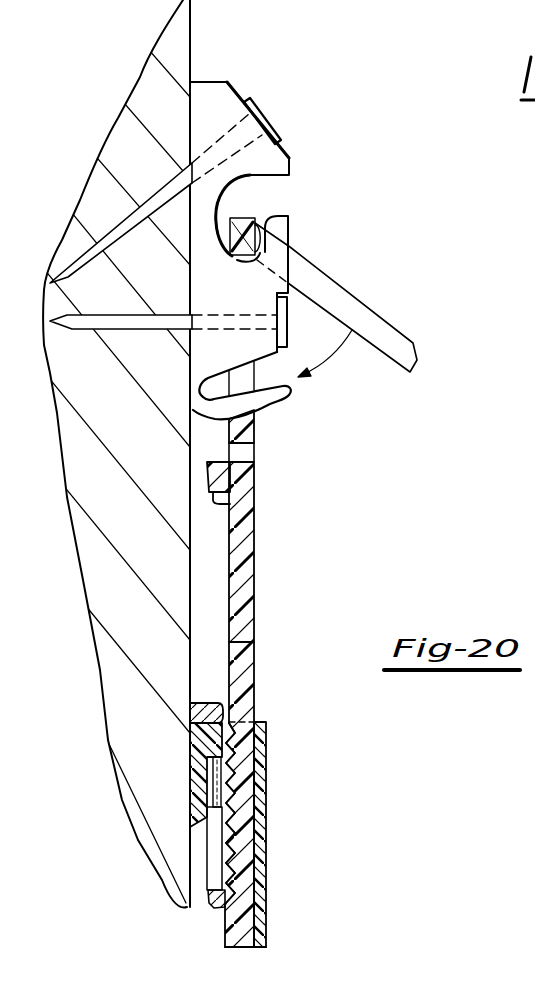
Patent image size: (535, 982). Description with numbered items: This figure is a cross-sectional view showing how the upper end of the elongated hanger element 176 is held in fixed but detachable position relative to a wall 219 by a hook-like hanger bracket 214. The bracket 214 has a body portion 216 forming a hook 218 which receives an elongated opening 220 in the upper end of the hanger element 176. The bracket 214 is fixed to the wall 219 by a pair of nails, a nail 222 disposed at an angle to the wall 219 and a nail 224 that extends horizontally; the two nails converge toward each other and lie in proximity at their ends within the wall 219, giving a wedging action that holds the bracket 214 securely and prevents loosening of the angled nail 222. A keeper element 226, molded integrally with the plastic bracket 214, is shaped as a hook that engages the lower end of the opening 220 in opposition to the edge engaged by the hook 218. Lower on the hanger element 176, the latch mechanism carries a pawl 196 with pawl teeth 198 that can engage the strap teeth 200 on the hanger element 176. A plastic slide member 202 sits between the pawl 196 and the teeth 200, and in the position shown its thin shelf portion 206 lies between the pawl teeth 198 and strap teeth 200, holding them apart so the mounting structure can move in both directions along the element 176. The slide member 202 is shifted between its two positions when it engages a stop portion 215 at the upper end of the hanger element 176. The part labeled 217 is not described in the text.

The elongated hanger element 176 is at (262, 586).
The latch element or pawl 196 is at (205, 765).
The pawl teeth 198 is at (232, 782).
The strap teeth 200 is at (228, 908).
The slide member 202 is at (254, 690).
The shelf portion 206 is at (220, 810).
The hanger bracket 214 is at (292, 150).
The stop portion 215 is at (226, 502).
The body portion 216 is at (282, 340).
The sleeve 217 is at (232, 842).
The hook 218 is at (277, 213).
The wall 219 is at (143, 97).
The elongated opening 220 is at (289, 279).
The nail 222 is at (255, 113).
The nail 224 is at (343, 318).
The keeper element 226 is at (275, 398).